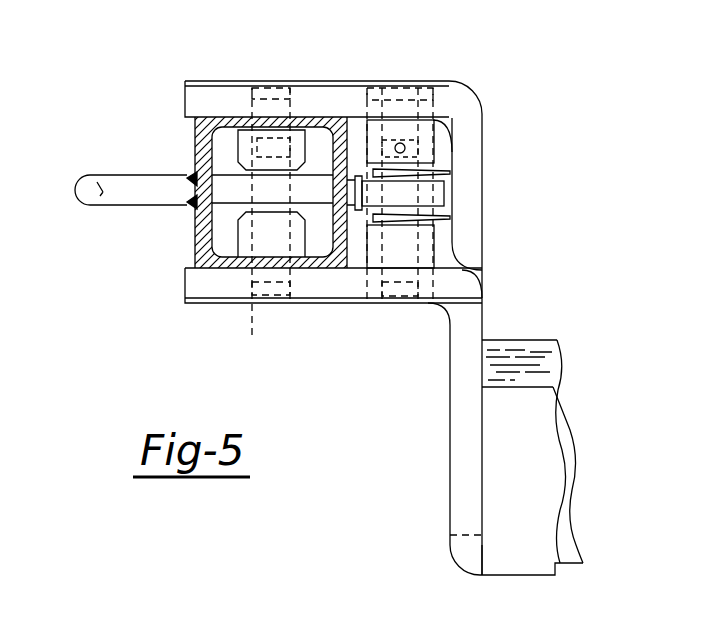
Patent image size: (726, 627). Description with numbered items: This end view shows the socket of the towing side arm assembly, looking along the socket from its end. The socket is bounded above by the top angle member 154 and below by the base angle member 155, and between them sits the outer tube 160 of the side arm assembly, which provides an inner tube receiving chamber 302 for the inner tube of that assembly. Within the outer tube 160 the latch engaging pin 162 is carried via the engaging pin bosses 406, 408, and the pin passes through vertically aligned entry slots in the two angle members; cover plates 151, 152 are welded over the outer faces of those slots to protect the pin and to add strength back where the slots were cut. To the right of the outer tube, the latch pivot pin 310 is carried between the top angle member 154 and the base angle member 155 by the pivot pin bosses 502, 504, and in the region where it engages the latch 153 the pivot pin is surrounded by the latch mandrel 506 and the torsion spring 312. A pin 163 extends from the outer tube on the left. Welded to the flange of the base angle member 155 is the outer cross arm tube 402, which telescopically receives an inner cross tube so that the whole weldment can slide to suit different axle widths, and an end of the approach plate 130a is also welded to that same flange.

The approach plate 130a is at (495, 513).
The cover plate 151 is at (195, 80).
The cover plate 152 is at (190, 303).
The latch 153 is at (232, 183).
The top angle member 154 is at (295, 87).
The base angle member 155 is at (453, 352).
The outer tube 160 is at (198, 127).
The latch engaging pin 162 is at (252, 218).
The pin 163 is at (108, 208).
The inner tube receiving chamber 302 is at (222, 225).
The latch pivot pin 310 is at (402, 85).
The torsion spring 312 is at (450, 180).
The outer cross arm tube 402 is at (557, 343).
The engaging pin boss 406 is at (240, 147).
The engaging pin boss 408 is at (305, 303).
The pivot pin boss 502 is at (435, 162).
The pivot pin boss 504 is at (434, 250).
The latch mandrel 506 is at (450, 214).